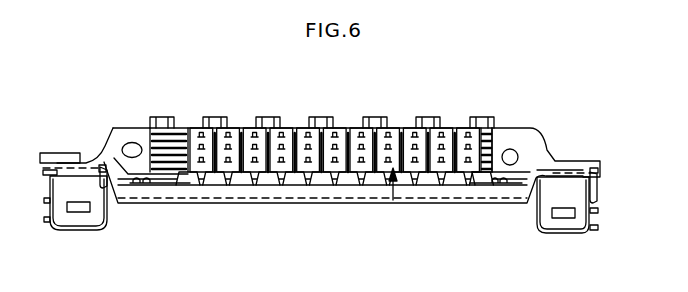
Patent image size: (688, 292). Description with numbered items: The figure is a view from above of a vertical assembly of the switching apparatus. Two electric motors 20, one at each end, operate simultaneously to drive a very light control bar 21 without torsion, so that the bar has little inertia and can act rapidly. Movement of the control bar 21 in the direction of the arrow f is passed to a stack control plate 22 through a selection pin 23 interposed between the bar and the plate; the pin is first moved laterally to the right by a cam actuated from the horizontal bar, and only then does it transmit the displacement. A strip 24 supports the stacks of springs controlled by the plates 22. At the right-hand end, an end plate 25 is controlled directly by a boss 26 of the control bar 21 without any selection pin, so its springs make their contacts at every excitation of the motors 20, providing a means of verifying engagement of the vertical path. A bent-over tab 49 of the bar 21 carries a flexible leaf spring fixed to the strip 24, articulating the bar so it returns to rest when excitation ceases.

The electric motor 20 is at (88, 218).
The control bar 21 is at (394, 195).
The stack control plate 22 is at (341, 135).
The selection pin 23 is at (329, 181).
The strip 24 is at (125, 137).
The end plate 25 is at (463, 137).
The boss 26 is at (465, 186).
The bent-over tab 49 is at (140, 183).